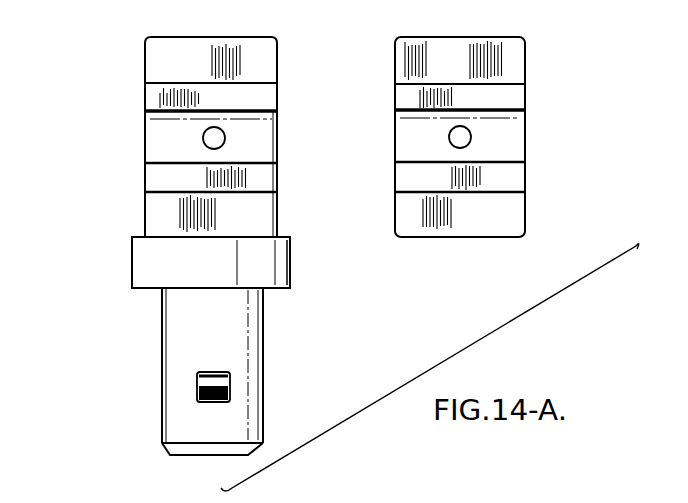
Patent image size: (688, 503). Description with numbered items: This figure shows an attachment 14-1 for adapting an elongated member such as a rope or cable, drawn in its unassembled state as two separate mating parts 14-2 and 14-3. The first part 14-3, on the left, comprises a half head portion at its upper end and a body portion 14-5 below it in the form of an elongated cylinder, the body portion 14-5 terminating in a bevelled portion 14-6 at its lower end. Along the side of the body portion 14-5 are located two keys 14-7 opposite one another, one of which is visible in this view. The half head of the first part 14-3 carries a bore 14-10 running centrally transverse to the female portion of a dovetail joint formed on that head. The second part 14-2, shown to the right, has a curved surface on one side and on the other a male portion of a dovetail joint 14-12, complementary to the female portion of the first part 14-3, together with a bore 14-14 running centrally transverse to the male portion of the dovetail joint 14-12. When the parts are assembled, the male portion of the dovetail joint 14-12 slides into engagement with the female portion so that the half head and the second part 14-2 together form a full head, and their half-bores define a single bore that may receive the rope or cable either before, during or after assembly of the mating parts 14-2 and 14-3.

The attachment 14-1 is at (121, 269).
The second part 14-2 is at (557, 150).
The first part 14-3 is at (131, 214).
The body portion 14-5 is at (151, 346).
The bevelled portion 14-6 is at (155, 454).
The key 14-7 is at (238, 407).
The bore 14-10 is at (203, 137).
The male portion of dovetail joint 14-12 is at (518, 97).
The bore 14-14 is at (449, 137).